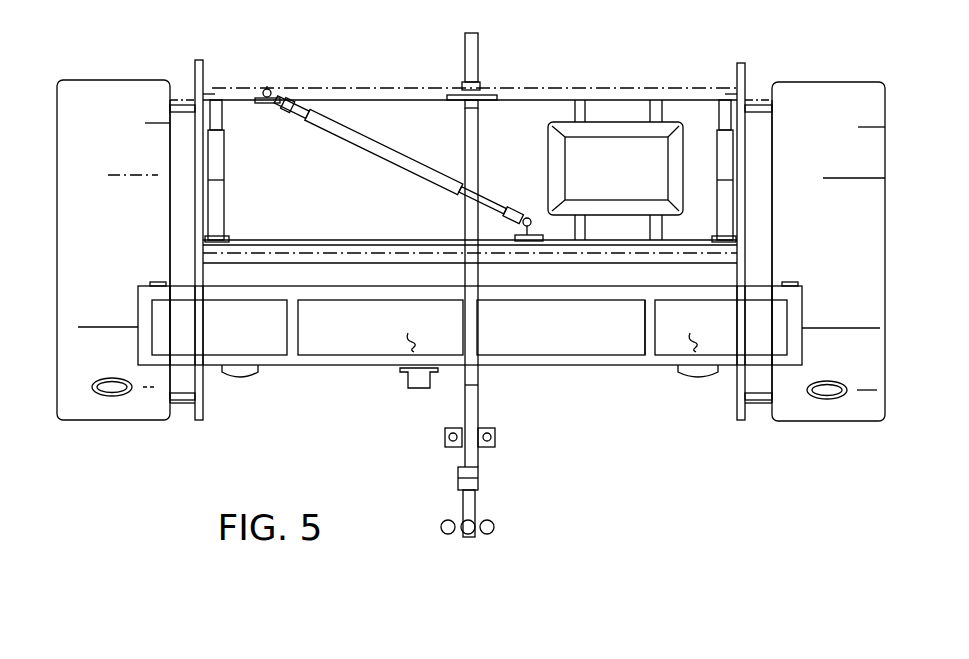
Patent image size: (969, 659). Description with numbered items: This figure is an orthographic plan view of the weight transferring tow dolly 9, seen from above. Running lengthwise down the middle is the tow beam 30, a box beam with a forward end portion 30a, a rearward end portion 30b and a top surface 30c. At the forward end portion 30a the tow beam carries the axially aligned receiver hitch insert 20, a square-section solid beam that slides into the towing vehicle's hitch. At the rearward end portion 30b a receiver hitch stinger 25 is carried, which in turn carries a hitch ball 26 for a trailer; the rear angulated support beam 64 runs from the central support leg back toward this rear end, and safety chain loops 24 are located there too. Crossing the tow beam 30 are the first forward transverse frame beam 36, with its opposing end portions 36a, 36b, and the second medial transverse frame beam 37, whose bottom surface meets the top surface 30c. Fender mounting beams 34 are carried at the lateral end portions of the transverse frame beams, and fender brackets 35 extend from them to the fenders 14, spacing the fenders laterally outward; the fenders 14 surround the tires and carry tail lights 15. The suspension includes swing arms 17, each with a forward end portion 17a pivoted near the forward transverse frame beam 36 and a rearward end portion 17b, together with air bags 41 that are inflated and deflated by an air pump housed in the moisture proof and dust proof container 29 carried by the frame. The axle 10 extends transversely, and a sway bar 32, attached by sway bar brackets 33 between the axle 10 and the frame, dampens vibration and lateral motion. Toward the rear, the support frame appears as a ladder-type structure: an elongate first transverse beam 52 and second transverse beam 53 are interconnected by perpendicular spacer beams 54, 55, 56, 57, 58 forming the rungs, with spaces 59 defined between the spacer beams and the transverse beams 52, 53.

The weight transferring tow dolly 9 is at (305, 76).
The axle 10 is at (173, 250).
The fenders 14 is at (77, 407).
The tail lights 15 is at (95, 382).
The swing arms 17 is at (222, 198).
The forward end portion of swing arm 17a is at (222, 108).
The rearward end portion of swing arm 17b is at (216, 222).
The receiver hitch insert 20 is at (473, 43).
The safety chain loops 24 is at (445, 433).
The receiver hitch stinger 25 is at (473, 508).
The hitch ball 26 is at (445, 530).
The container 29 is at (600, 179).
The tow beam 30 is at (467, 228).
The forward end portion of tow beam 30a is at (470, 90).
The rearward end portion of tow beam 30b is at (458, 480).
The top surface of tow beam 30c is at (472, 147).
The sway bar 32 is at (370, 160).
The sway bar brackets 33 is at (253, 100).
The fender mounting beams 34 is at (195, 75).
The fender brackets 35 is at (178, 110).
The first forward transverse frame beam 36 is at (362, 97).
The end portion of first transverse frame beam 36a is at (212, 95).
The end portion of first transverse frame beam 36b is at (730, 95).
The second medial transverse frame beam 37 is at (273, 253).
The air bags 41 is at (220, 265).
The first transverse beam 52 is at (308, 293).
The second transverse beam 53 is at (308, 362).
The spacer beam 54 is at (145, 312).
The spacer beam 55 is at (285, 312).
The spacer beam 56 is at (470, 335).
The spacer beam 57 is at (637, 307).
The spacer beam 58 is at (792, 310).
The spaces 59 is at (544, 326).
The rear angulated support beam 64 is at (477, 385).